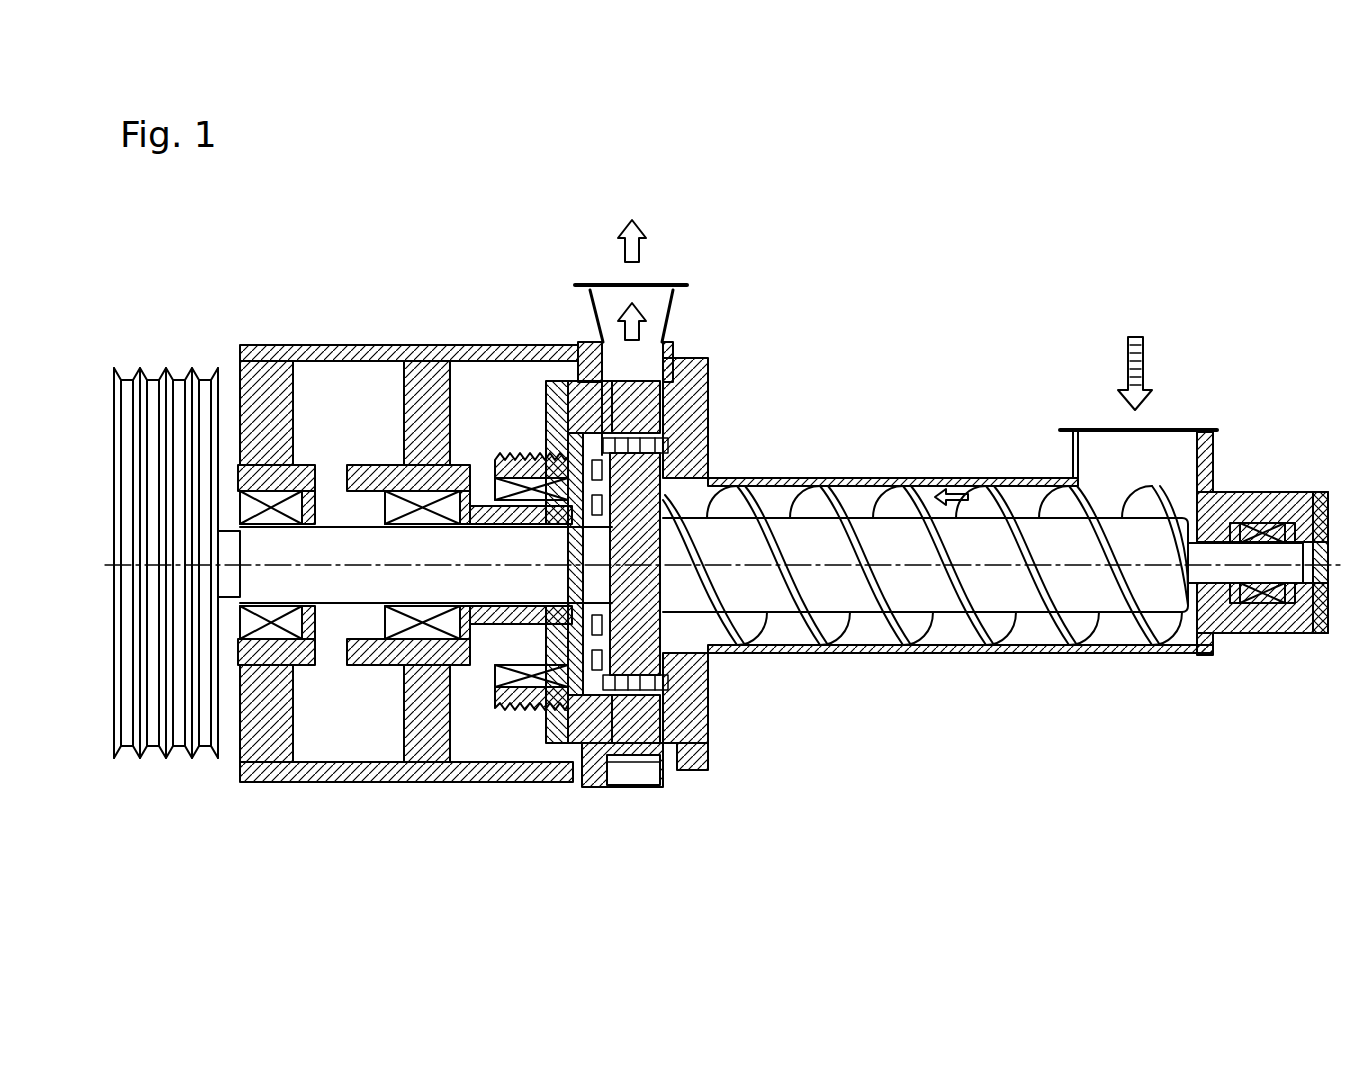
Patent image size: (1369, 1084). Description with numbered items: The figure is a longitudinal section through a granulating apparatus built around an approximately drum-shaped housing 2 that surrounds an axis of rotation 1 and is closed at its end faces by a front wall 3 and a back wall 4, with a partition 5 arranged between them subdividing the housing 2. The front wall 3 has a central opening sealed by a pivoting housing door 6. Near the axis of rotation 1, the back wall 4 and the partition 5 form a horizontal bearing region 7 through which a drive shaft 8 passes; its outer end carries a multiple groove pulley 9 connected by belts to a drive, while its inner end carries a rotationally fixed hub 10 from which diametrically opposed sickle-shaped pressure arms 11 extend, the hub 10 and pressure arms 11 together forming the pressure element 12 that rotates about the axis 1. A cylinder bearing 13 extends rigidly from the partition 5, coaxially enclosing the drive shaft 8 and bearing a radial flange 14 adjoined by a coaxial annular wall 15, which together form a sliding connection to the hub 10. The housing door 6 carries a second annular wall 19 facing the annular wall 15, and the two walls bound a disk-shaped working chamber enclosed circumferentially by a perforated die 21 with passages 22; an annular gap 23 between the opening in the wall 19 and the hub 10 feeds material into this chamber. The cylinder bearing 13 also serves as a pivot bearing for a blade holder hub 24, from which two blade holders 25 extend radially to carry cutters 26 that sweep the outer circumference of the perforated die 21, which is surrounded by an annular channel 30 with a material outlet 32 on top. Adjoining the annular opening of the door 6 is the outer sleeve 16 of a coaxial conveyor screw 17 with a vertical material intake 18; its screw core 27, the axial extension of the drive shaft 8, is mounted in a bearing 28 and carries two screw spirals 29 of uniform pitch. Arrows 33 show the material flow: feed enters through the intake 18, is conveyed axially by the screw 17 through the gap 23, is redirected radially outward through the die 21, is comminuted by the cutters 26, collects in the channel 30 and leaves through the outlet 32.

The axis of rotation 1 is at (1240, 492).
The housing 2 is at (425, 292).
The front wall 3 is at (676, 342).
The back wall 4 is at (238, 360).
The partition 5 is at (477, 345).
The housing door 6 is at (705, 358).
The stator 7 is at (297, 372).
The drive shaft 8 is at (288, 585).
The multiple groove pulley 9 is at (115, 368).
The hub 10 is at (768, 615).
The pressure arms 11 is at (713, 465).
The pressure element 12 is at (675, 775).
The cylinder bearing 13 is at (420, 690).
The flange 14 is at (545, 785).
The annular wall 15 is at (607, 795).
The outer sleeve 16 is at (905, 478).
The conveyor screw 17 is at (990, 705).
The material intake 18 is at (1192, 428).
The second annular wall 19 is at (706, 358).
The perforated die 21 is at (712, 728).
The passages 22 is at (717, 745).
The annular gap 23 is at (736, 478).
The blade holder hub 24 is at (485, 783).
The blade holders 25 is at (566, 345).
The cutters 26 is at (615, 790).
The screw core 27 is at (1042, 655).
The bearing 28 is at (1250, 635).
The screw spirals 29 is at (932, 655).
The annular channel 30 is at (632, 792).
The material outlet 32 is at (590, 340).
The arrows 33 is at (612, 318).